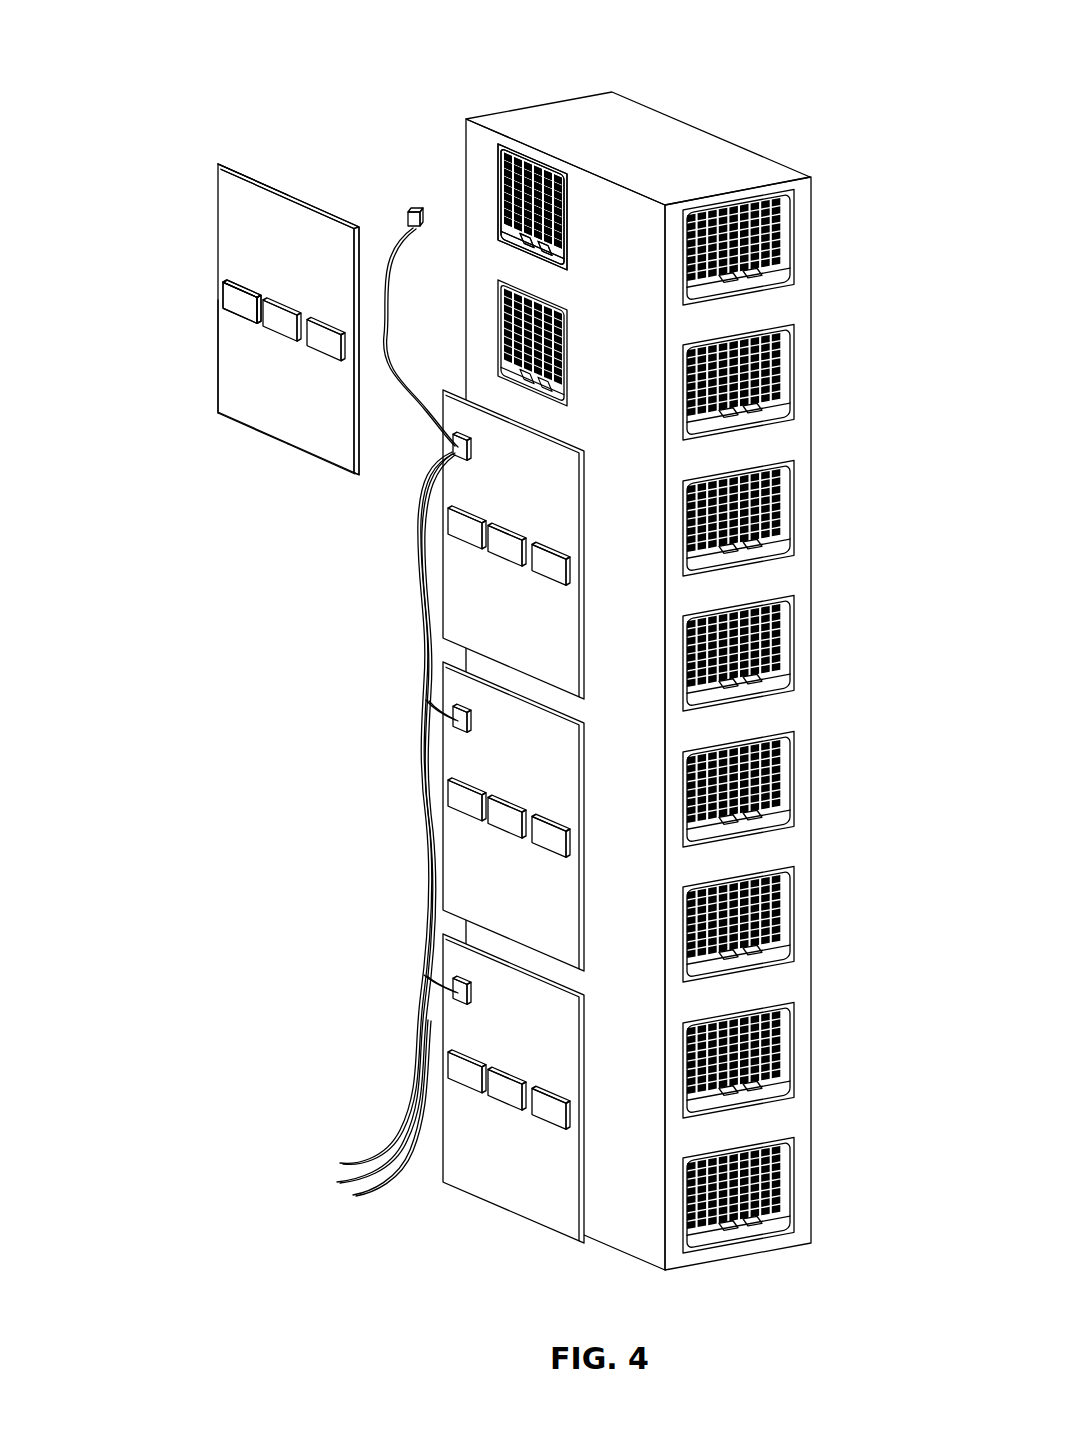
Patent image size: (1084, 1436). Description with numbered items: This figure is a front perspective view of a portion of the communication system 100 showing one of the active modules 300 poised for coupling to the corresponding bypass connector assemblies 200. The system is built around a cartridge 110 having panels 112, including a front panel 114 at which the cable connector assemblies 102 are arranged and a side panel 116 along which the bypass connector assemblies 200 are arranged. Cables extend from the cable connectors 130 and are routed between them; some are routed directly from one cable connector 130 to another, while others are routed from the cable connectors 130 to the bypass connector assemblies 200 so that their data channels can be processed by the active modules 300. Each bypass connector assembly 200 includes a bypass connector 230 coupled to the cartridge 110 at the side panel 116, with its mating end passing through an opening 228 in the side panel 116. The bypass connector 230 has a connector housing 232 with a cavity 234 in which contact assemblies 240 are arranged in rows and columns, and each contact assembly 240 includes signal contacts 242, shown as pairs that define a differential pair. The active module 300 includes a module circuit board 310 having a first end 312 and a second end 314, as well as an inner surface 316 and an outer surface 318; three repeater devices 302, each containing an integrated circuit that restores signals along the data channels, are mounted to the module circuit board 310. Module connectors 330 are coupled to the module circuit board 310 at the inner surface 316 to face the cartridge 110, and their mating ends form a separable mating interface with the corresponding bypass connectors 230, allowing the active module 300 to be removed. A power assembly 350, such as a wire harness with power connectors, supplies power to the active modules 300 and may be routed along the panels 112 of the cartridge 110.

The communication system 100 is at (383, 38).
The cable connector assembly 102 is at (785, 243).
The cartridge 110 is at (675, 145).
The panels 112 is at (626, 1206).
The front panel 114 is at (785, 990).
The side panel 116 is at (622, 696).
The cable connector 130 is at (785, 270).
The bypass connector assembly 200 is at (498, 185).
The opening 228 is at (508, 145).
The bypass connector 230 is at (508, 216).
The connector housing 232 is at (552, 267).
The cavity 234 is at (522, 160).
The contact assembly 240 is at (504, 234).
The signal contact 242 is at (527, 244).
The active module 300 is at (185, 230).
The repeater device 302 is at (235, 300).
The module circuit board 310 is at (218, 399).
The first end 312 is at (240, 160).
The second end 314 is at (268, 438).
The inner surface 316 is at (357, 440).
The outer surface 318 is at (330, 450).
The module connector 330 is at (298, 182).
The power assembly 350 is at (390, 945).